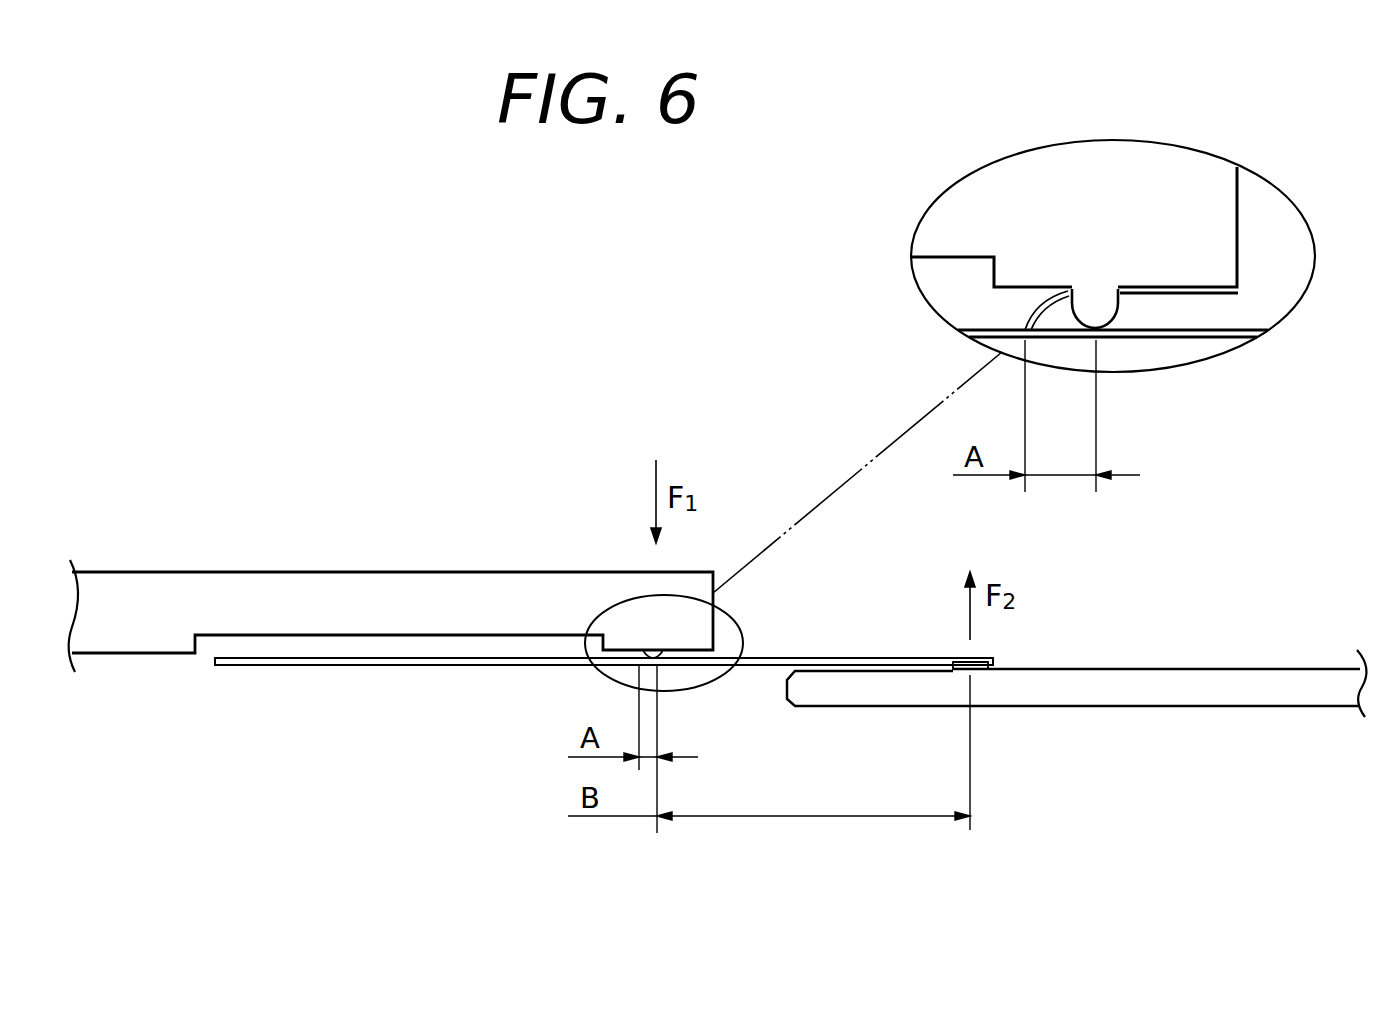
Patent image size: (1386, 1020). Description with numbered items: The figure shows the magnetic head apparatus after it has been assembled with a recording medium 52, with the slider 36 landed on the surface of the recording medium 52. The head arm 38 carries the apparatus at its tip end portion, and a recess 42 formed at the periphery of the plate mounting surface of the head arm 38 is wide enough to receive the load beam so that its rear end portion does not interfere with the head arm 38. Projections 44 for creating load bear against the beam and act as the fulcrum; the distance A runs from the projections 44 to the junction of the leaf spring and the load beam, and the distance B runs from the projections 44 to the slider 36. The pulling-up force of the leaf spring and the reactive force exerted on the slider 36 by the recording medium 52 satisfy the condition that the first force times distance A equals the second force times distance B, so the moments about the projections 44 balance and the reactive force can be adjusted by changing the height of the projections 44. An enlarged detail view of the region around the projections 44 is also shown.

The slider 36 is at (988, 670).
The head arm 38 is at (497, 588).
The recess 42 is at (400, 638).
The projections 44 is at (665, 658).
The recording medium 52 is at (1162, 670).